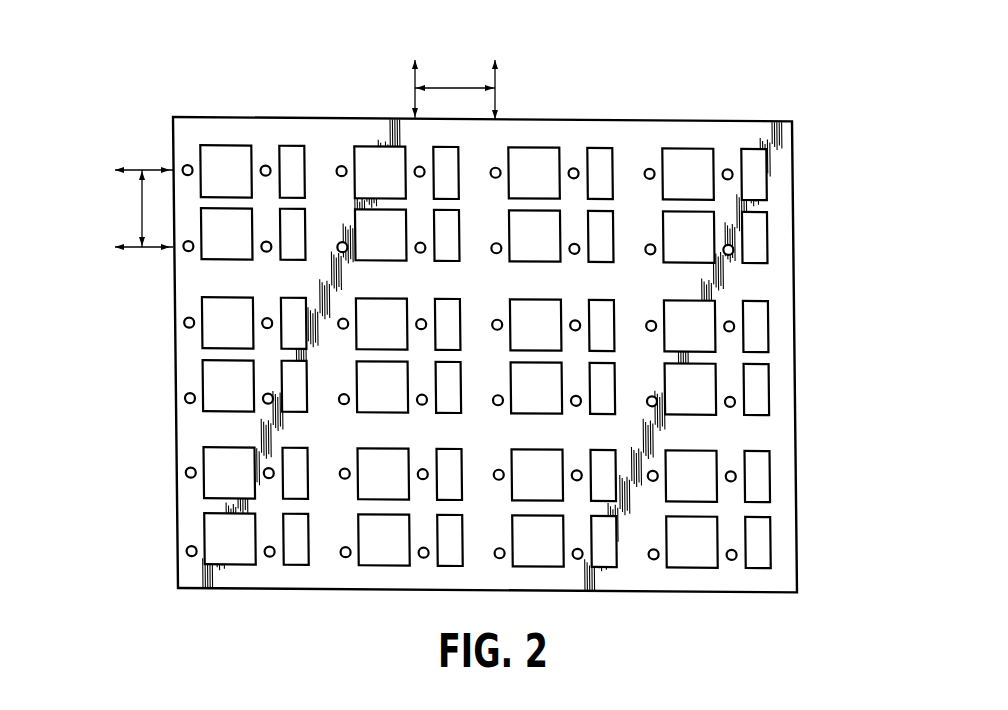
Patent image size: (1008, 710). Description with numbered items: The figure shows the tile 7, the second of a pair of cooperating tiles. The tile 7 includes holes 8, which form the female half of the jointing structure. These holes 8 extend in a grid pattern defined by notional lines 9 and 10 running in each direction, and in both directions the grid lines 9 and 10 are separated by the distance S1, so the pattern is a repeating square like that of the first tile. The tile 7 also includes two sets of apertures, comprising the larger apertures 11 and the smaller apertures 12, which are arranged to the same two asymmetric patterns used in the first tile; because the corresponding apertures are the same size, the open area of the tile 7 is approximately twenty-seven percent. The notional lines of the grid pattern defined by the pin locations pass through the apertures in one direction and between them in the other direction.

The tile 7 is at (826, 242).
The holes 8 is at (263, 164).
The notional lines 9 is at (138, 169).
The notional lines 10 is at (415, 82).
The larger apertures 11 is at (394, 184).
The smaller apertures 12 is at (448, 166).
The distance S1 is at (298, 145).